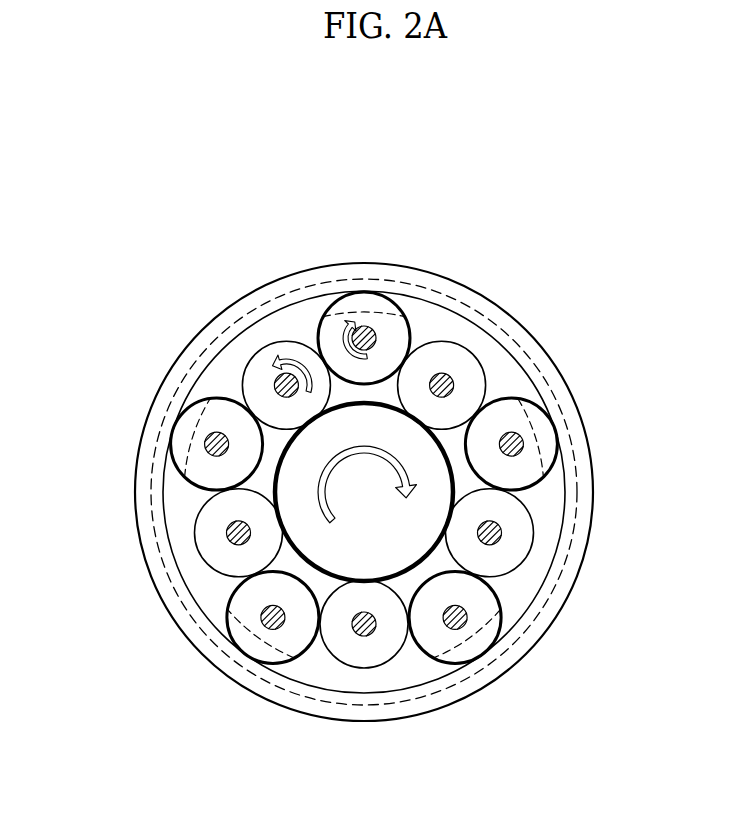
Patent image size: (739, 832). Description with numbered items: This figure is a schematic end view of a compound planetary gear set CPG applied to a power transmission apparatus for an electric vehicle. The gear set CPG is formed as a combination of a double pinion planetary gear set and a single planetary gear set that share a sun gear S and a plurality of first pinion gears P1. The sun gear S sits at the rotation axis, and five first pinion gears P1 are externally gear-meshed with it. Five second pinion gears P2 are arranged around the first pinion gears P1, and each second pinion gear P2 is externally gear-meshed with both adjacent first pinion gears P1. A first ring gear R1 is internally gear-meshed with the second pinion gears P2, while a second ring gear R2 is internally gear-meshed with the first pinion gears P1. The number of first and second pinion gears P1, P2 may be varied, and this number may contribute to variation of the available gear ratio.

The compound planetary gear set CPG is at (173, 307).
The sun gear S is at (390, 560).
The first pinion gears P1 is at (250, 382).
The second pinion gears P2 is at (383, 304).
The first ring gear R1 is at (563, 585).
The second ring gear R2 is at (548, 535).